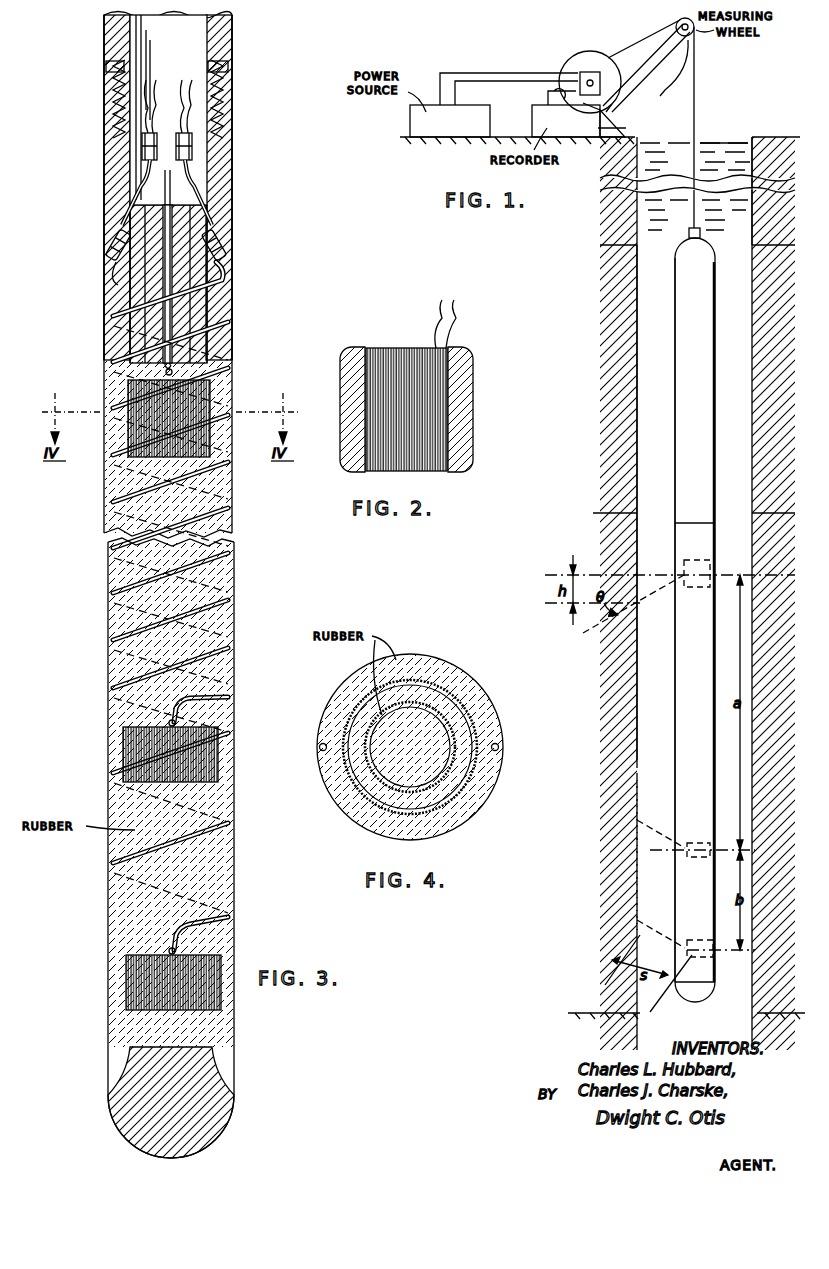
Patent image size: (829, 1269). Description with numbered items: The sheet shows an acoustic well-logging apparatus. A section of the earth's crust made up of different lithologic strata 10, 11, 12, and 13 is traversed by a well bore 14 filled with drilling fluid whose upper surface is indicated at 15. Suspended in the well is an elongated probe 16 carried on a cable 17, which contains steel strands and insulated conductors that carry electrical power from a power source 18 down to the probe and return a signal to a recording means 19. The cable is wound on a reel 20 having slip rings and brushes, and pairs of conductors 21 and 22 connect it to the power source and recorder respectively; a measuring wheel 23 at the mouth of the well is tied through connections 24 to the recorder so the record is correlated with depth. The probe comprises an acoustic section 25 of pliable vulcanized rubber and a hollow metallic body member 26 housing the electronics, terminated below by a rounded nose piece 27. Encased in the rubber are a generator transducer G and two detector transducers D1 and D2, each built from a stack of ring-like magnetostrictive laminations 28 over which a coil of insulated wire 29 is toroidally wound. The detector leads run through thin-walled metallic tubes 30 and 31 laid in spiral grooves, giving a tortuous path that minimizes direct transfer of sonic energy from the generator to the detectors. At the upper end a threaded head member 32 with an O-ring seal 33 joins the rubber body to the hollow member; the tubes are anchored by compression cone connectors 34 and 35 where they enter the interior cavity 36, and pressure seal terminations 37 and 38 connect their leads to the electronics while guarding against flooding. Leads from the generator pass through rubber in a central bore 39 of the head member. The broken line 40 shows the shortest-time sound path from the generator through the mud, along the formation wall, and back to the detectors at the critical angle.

In FIG. 1, the lithologic stratum 10 is at (580, 221).
In FIG. 1, the lithologic stratum 11 is at (598, 380).
In FIG. 1, the lithologic stratum 12 is at (600, 723).
In FIG. 1, the lithologic stratum 13 is at (610, 1040).
In FIG. 1, the well bore 14 is at (750, 140).
In FIG. 1, the upper surface of drilling fluid 15 is at (712, 141).
In FIG. 1, the probe 16 is at (702, 280).
In FIG. 1, the cable 17 is at (696, 92).
In FIG. 1, the power source 18 is at (458, 127).
In FIG. 1, the recording means 19 is at (574, 127).
In FIG. 1, the reel 20 is at (586, 62).
In FIG. 1, the pair of conductors 21 is at (474, 81).
In FIG. 1, the pair of conductors 22 is at (546, 93).
In FIG. 1, the measuring wheel 23 is at (676, 26).
In FIG. 1, the connections 24 is at (672, 80).
In FIG. 3, the acoustic section 25 is at (232, 520).
In FIG. 1, the acoustic section 25 is at (678, 754).
In FIG. 4, the acoustic section 25 is at (348, 820).
In FIG. 3, the hollow body member 26 is at (104, 42).
In FIG. 1, the hollow body member 26 is at (712, 456).
In FIG. 3, the nose piece 27 is at (133, 1112).
In FIG. 1, the nose piece 27 is at (712, 992).
In FIG. 2, the ring-like laminations 28 is at (342, 375).
In FIG. 4, the ring-like laminations 28 is at (455, 782).
In FIG. 2, the coil of insulated wire 29 is at (397, 352).
In FIG. 4, the coil of insulated wire 29 is at (470, 705).
In FIG. 3, the metallic tube 30 is at (113, 638).
In FIG. 4, the metallic tube 30 is at (320, 746).
In FIG. 3, the metallic tube 31 is at (232, 668).
In FIG. 4, the metallic tube 31 is at (499, 748).
In FIG. 3, the head member 32 is at (228, 205).
In FIG. 1, the head member 32 is at (712, 536).
In FIG. 3, the O-ring seal 33 is at (228, 68).
In FIG. 3, the compression cone connector 34 is at (110, 240).
In FIG. 3, the compression cone connector 35 is at (222, 240).
In FIG. 3, the interior cavity 36 is at (136, 185).
In FIG. 3, the pressure seal termination 37 is at (142, 151).
In FIG. 3, the pressure seal termination 38 is at (192, 151).
In FIG. 3, the central bore 39 is at (210, 310).
In FIG. 1, the broken line 40 is at (637, 768).
In FIG. 3, the electro-acoustic transducer G is at (205, 402).
In FIG. 1, the electro-acoustic transducer G is at (694, 588).
In FIG. 3, the electro-acoustic transducer D1 is at (140, 752).
In FIG. 1, the electro-acoustic transducer D1 is at (700, 843).
In FIG. 3, the electro-acoustic transducer D2 is at (145, 970).
In FIG. 1, the electro-acoustic transducer D2 is at (700, 940).